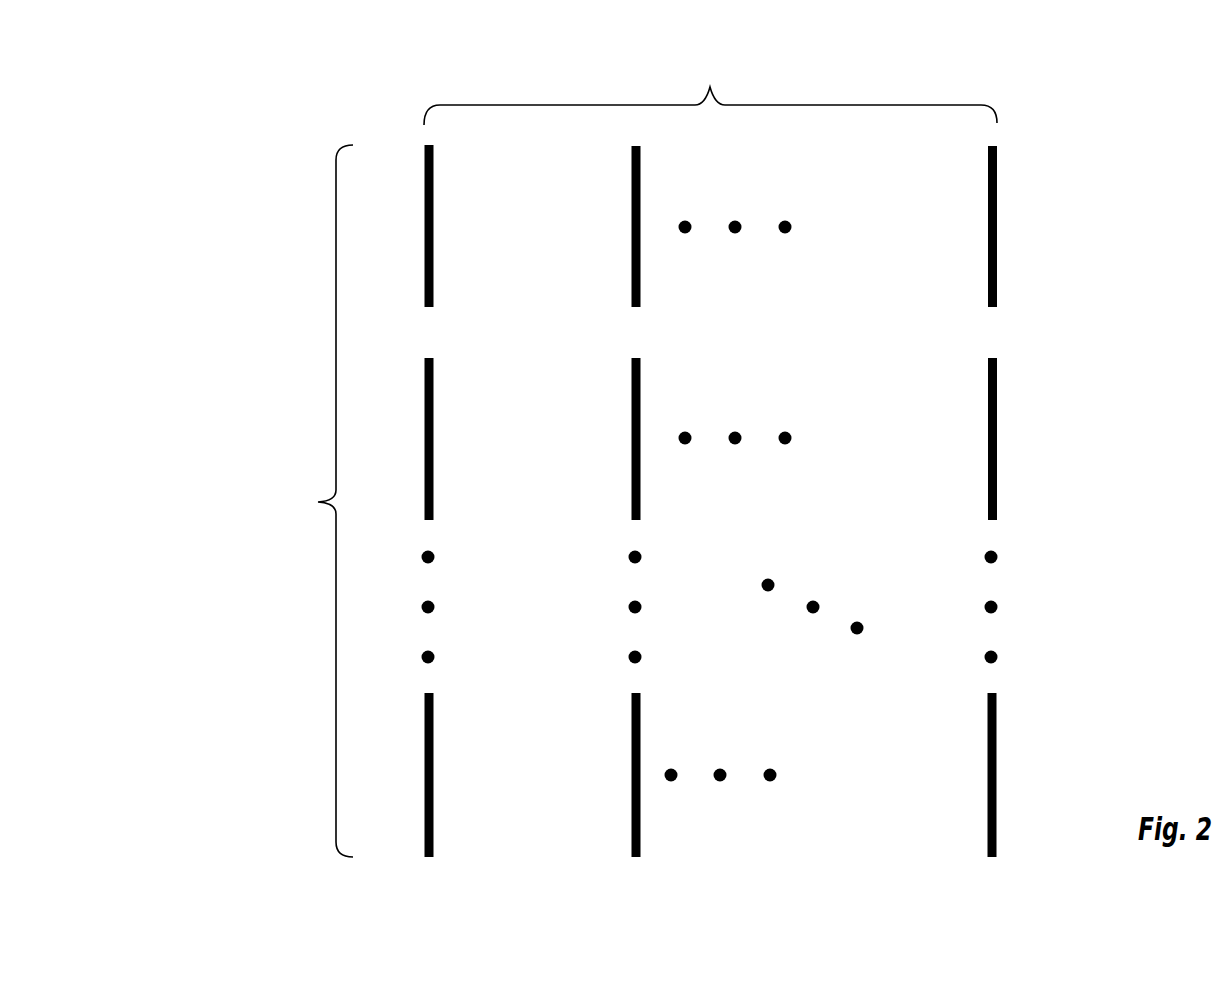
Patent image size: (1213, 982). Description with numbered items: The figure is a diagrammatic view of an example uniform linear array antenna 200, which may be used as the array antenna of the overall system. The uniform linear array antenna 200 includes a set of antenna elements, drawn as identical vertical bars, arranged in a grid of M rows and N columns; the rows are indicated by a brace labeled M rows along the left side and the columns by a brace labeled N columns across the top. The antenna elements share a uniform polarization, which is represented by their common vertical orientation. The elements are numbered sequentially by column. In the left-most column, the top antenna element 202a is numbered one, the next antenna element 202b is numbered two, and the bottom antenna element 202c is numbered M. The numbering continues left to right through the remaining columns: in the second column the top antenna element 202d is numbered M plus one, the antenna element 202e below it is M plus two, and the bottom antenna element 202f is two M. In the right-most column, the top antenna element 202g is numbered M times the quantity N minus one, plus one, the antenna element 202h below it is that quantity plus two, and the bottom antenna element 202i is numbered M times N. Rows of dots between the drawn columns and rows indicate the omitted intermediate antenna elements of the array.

The uniform linear array antenna 200 is at (283, 85).
The antenna element 202a is at (434, 158).
The antenna element 202b is at (434, 371).
The antenna element 202c is at (434, 710).
The antenna element 202d is at (641, 158).
The antenna element 202e is at (641, 371).
The antenna element 202f is at (641, 710).
The antenna element 202g is at (997, 158).
The antenna element 202h is at (997, 371).
The antenna element 202i is at (997, 710).